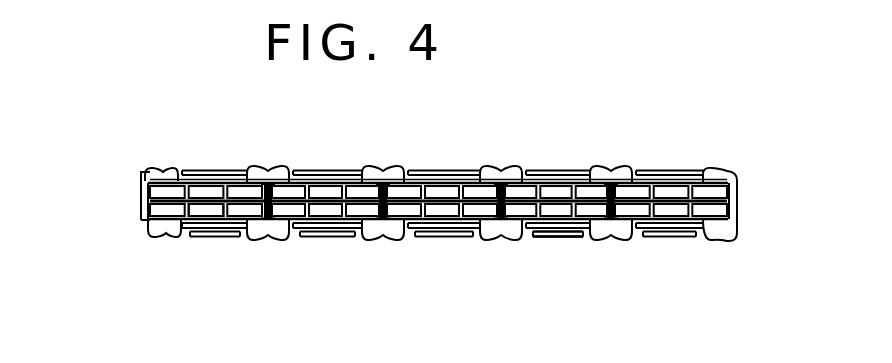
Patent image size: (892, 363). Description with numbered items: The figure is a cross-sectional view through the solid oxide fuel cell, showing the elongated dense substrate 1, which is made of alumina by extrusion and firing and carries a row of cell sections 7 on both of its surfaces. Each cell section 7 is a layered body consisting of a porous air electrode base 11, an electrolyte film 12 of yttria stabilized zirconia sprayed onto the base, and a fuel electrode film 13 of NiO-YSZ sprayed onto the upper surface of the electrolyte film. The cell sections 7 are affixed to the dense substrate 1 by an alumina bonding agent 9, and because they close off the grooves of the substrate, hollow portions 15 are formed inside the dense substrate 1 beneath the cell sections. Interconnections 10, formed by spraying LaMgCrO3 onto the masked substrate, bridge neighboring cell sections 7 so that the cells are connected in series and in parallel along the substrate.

The dense substrate 1 is at (143, 218).
The cell section 7 is at (626, 285).
The alumina bonding agent 9 is at (740, 196).
The interconnection 10 is at (161, 169).
The porous air electrode base 11 is at (588, 235).
The electrolyte film 12 is at (562, 238).
The fuel electrode film 13 is at (217, 171).
The hollow portion 15 is at (208, 208).